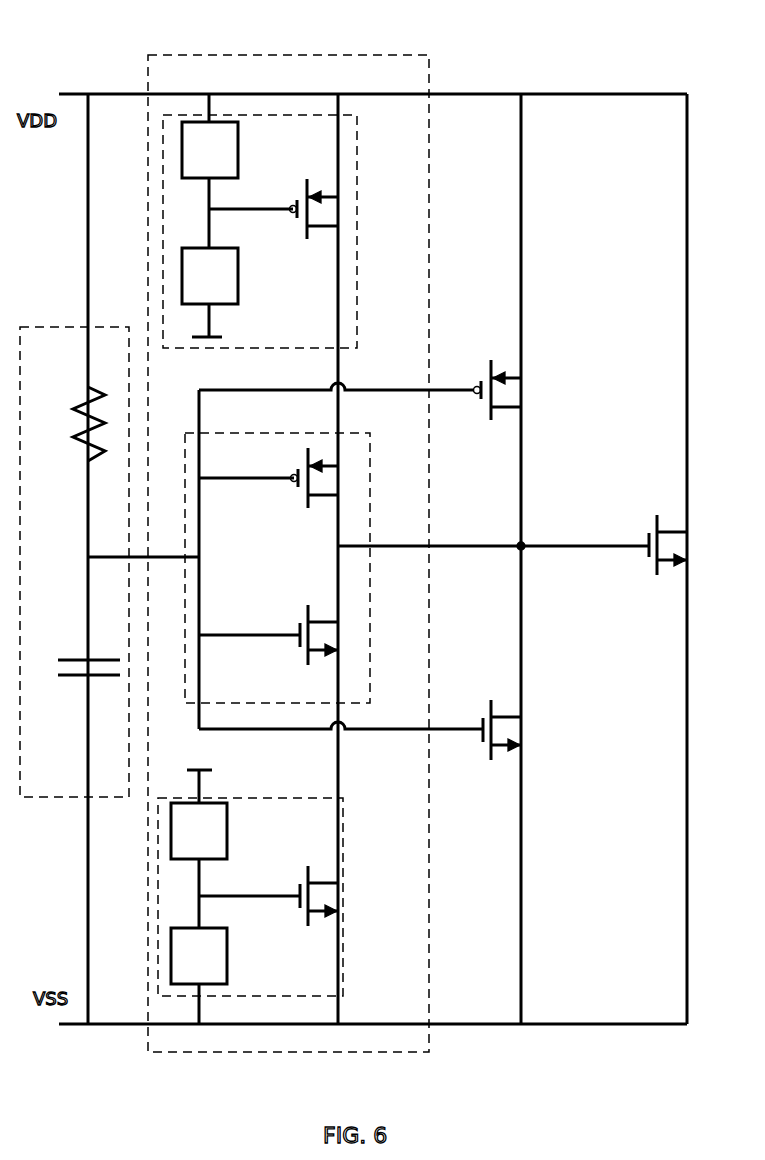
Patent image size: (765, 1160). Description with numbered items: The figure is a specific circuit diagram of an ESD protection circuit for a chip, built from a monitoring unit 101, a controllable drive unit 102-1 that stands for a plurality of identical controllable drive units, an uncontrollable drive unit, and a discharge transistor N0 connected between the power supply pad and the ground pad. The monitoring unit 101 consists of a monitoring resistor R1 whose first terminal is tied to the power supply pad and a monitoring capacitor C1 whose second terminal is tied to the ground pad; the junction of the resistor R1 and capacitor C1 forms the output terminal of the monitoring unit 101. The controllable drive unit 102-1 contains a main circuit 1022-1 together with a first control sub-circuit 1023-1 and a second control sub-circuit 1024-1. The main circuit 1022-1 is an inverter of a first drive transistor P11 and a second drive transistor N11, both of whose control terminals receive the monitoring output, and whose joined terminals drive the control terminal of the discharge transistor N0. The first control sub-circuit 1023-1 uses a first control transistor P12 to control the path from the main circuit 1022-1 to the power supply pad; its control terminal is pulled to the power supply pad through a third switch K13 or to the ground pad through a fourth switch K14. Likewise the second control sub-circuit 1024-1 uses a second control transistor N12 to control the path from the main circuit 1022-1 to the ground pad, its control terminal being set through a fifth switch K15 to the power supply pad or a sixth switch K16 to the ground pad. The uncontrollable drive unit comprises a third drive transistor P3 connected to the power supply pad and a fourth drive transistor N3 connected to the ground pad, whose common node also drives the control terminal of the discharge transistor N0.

The monitoring unit 101 is at (40, 308).
The controllable drive unit 102-1 is at (325, 49).
The first control sub-circuit 1023-1 is at (187, 110).
The main circuit 1022-1 is at (370, 705).
The second control sub-circuit 1024-1 is at (288, 998).
The monitoring resistor R1 is at (73, 424).
The monitoring capacitor C1 is at (81, 688).
The third switch K13 is at (210, 150).
The fourth switch K14 is at (210, 276).
The fifth switch K15 is at (199, 831).
The sixth switch K16 is at (199, 956).
The first control transistor P12 is at (314, 225).
The first drive transistor P11 is at (315, 492).
The second drive transistor N11 is at (312, 651).
The second control transistor N12 is at (315, 911).
The third drive transistor P3 is at (498, 366).
The fourth drive transistor N3 is at (502, 756).
The discharge transistor N0 is at (666, 568).